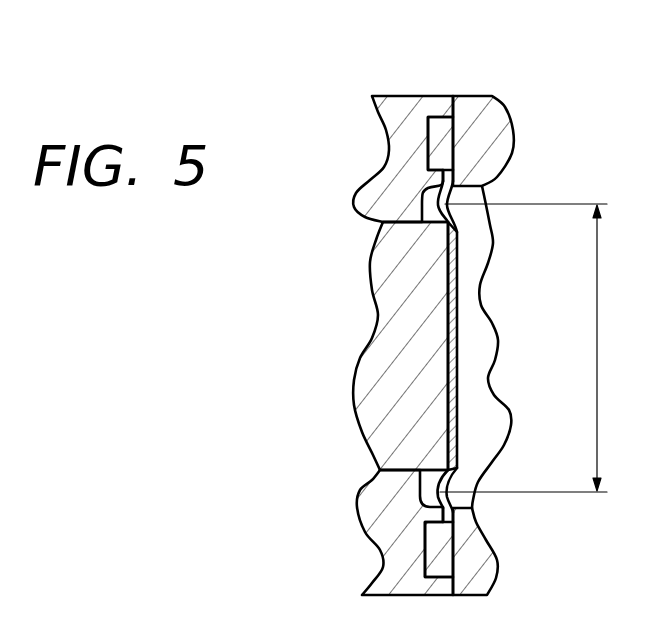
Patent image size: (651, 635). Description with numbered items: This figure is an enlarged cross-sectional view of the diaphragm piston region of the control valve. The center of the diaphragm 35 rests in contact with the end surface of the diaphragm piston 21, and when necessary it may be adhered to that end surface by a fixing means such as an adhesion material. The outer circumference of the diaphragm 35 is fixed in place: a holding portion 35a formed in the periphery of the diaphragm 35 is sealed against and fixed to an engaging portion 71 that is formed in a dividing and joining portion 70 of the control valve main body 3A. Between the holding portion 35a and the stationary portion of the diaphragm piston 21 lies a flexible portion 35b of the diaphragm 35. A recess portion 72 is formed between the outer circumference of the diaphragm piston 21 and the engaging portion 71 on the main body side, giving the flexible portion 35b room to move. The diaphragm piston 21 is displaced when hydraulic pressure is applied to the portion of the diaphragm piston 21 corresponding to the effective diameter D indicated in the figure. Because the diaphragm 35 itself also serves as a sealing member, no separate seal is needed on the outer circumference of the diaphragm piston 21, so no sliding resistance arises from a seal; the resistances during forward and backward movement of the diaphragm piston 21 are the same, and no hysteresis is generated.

The control valve main body 3A is at (390, 167).
The diaphragm piston 21 is at (358, 412).
The diaphragm 35 is at (455, 417).
The holding portion 35a is at (446, 140).
The flexible portion 35b is at (450, 213).
The dividing and joining portion 70 is at (457, 96).
The engaging portion 71 is at (427, 118).
The recess portion 72 is at (387, 222).
The effective diameter D is at (532, 348).